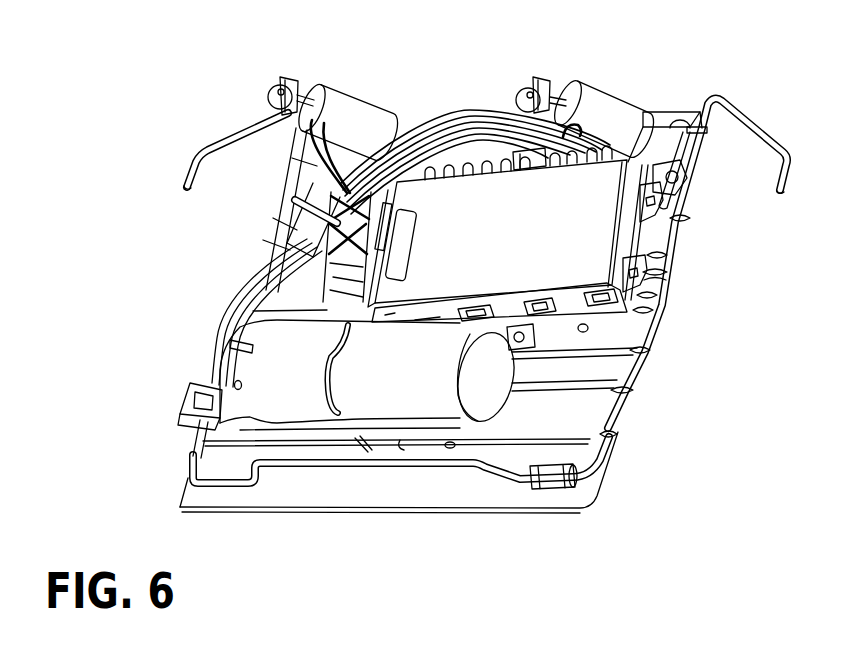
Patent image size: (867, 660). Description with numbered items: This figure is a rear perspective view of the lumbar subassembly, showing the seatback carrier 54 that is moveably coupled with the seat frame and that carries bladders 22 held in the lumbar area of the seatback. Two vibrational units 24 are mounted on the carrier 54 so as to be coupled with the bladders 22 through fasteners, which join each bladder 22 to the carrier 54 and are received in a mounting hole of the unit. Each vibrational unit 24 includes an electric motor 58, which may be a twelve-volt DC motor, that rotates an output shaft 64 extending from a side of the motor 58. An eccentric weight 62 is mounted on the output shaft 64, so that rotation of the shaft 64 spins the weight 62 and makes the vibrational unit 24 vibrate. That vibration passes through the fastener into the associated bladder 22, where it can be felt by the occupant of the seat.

The bladder 22 is at (482, 336).
The vibrational unit 24 is at (458, 82).
The carrier 54 is at (453, 490).
The electric motor 58 is at (363, 115).
The eccentric weight 62 is at (273, 92).
The output shaft 64 is at (343, 84).